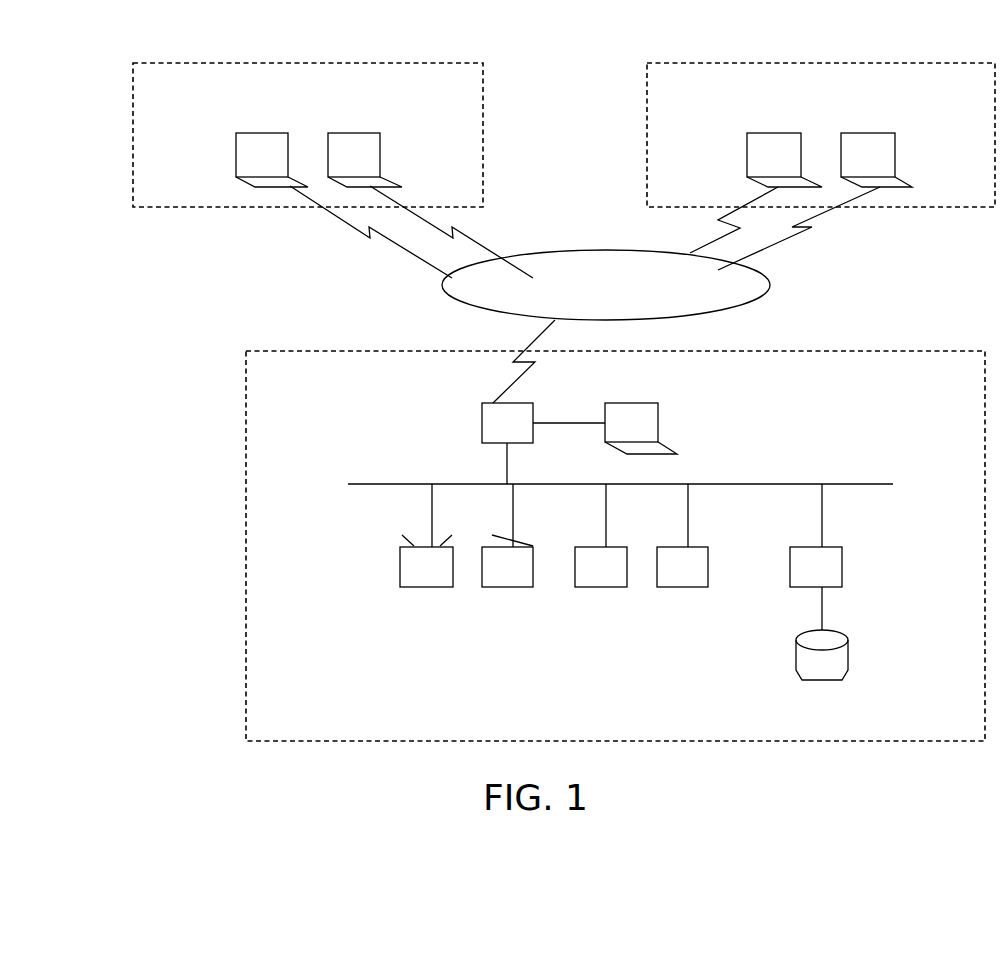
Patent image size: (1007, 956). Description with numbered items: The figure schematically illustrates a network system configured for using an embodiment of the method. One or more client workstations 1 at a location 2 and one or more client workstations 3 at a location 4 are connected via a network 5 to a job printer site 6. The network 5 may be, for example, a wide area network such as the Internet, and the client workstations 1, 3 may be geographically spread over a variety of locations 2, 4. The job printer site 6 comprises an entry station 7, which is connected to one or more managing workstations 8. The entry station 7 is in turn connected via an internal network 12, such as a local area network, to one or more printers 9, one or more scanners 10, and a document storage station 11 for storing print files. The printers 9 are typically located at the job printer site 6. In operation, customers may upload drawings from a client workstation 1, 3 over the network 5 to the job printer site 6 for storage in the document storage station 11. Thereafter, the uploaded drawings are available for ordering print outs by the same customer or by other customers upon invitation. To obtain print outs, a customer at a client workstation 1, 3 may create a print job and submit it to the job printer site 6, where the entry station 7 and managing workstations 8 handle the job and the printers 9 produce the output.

The client workstation 1 is at (236, 153).
The location 2 is at (183, 209).
The client workstation 3 is at (747, 155).
The location 4 is at (965, 208).
The network 5 is at (768, 288).
The job printer site 6 is at (240, 351).
The entry station 7 is at (482, 425).
The managing workstation 8 is at (658, 423).
The printer 9 is at (422, 587).
The scanner 10 is at (512, 587).
The document storage station 11 is at (842, 567).
The internal network 12 is at (780, 484).